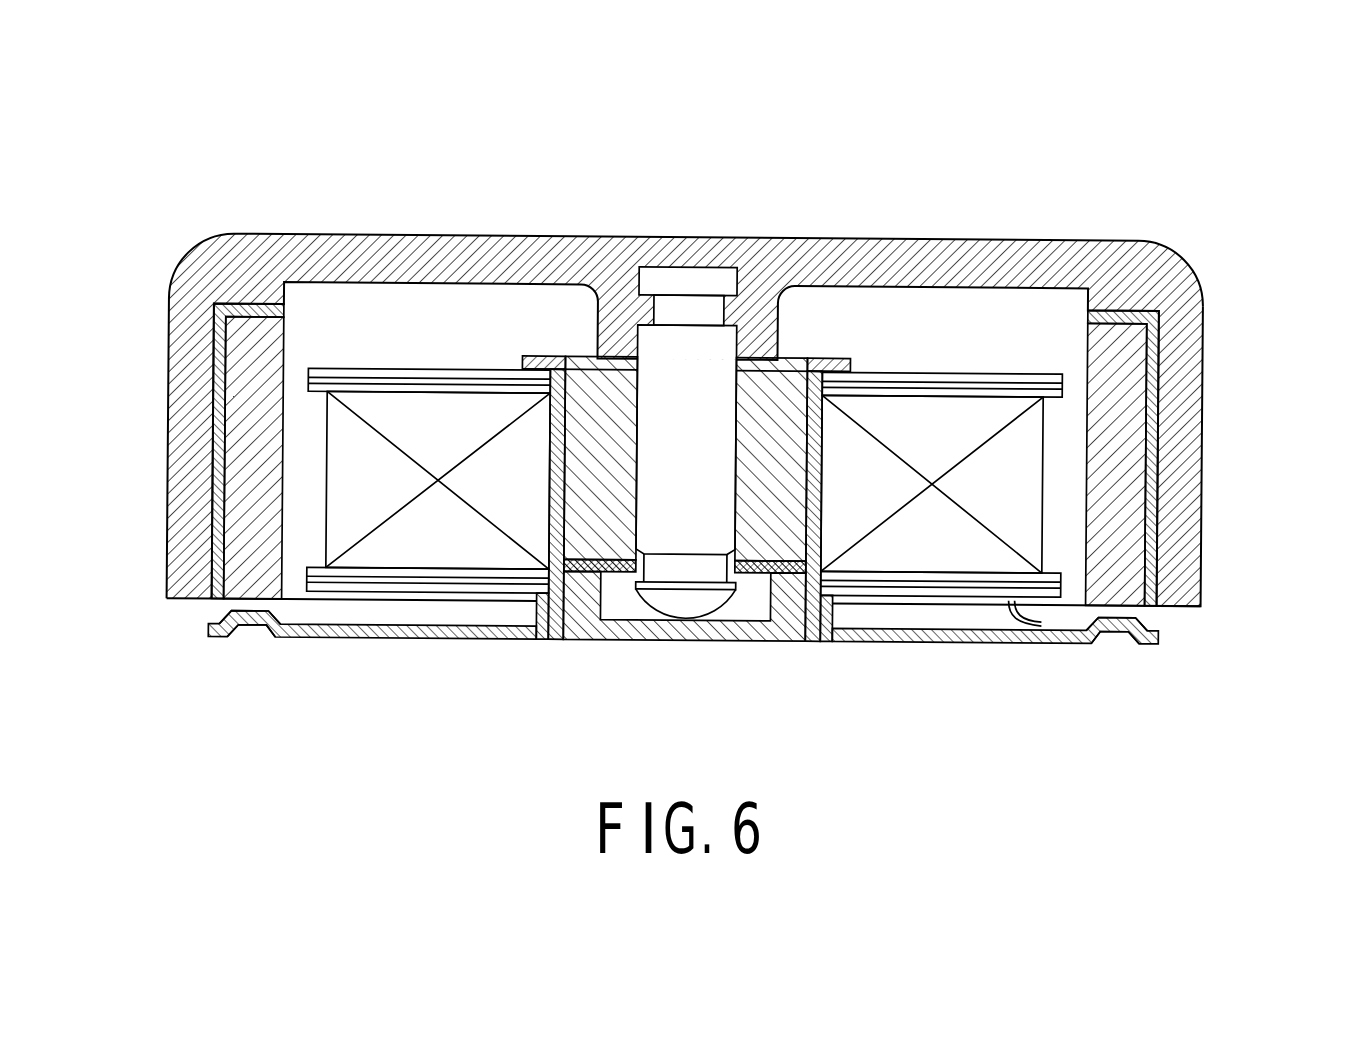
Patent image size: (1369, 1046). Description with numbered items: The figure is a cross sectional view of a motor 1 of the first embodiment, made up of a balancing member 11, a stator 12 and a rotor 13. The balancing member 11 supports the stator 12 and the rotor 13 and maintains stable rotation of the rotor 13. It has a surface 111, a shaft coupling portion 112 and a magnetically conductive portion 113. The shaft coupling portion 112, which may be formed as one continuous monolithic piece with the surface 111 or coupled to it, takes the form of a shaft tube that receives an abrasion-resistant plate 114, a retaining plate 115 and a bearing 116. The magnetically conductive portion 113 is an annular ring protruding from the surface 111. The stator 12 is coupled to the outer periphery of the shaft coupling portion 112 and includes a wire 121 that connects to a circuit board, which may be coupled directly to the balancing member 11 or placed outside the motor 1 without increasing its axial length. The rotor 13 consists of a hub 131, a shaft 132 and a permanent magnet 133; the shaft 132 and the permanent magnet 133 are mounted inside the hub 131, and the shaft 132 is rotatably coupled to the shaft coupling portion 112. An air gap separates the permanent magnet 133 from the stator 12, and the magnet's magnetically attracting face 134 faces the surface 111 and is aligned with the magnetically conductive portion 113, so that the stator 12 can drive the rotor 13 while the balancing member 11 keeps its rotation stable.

The motor 1 is at (192, 186).
The balancing member 11 is at (226, 664).
The surface 111 is at (385, 621).
The shaft coupling portion 112 is at (818, 494).
The magnetically conductive portion 113 is at (258, 607).
The abrasion-resistant plate 114 is at (782, 642).
The retaining plate 115 is at (617, 572).
The bearing 116 is at (582, 385).
The stator 12 is at (1012, 377).
The wire 121 is at (1020, 625).
The rotor 13 is at (882, 253).
The hub 131 is at (1203, 398).
The shaft 132 is at (690, 363).
The permanent magnet 133 is at (258, 342).
The magnetically attracting face 134 is at (240, 600).